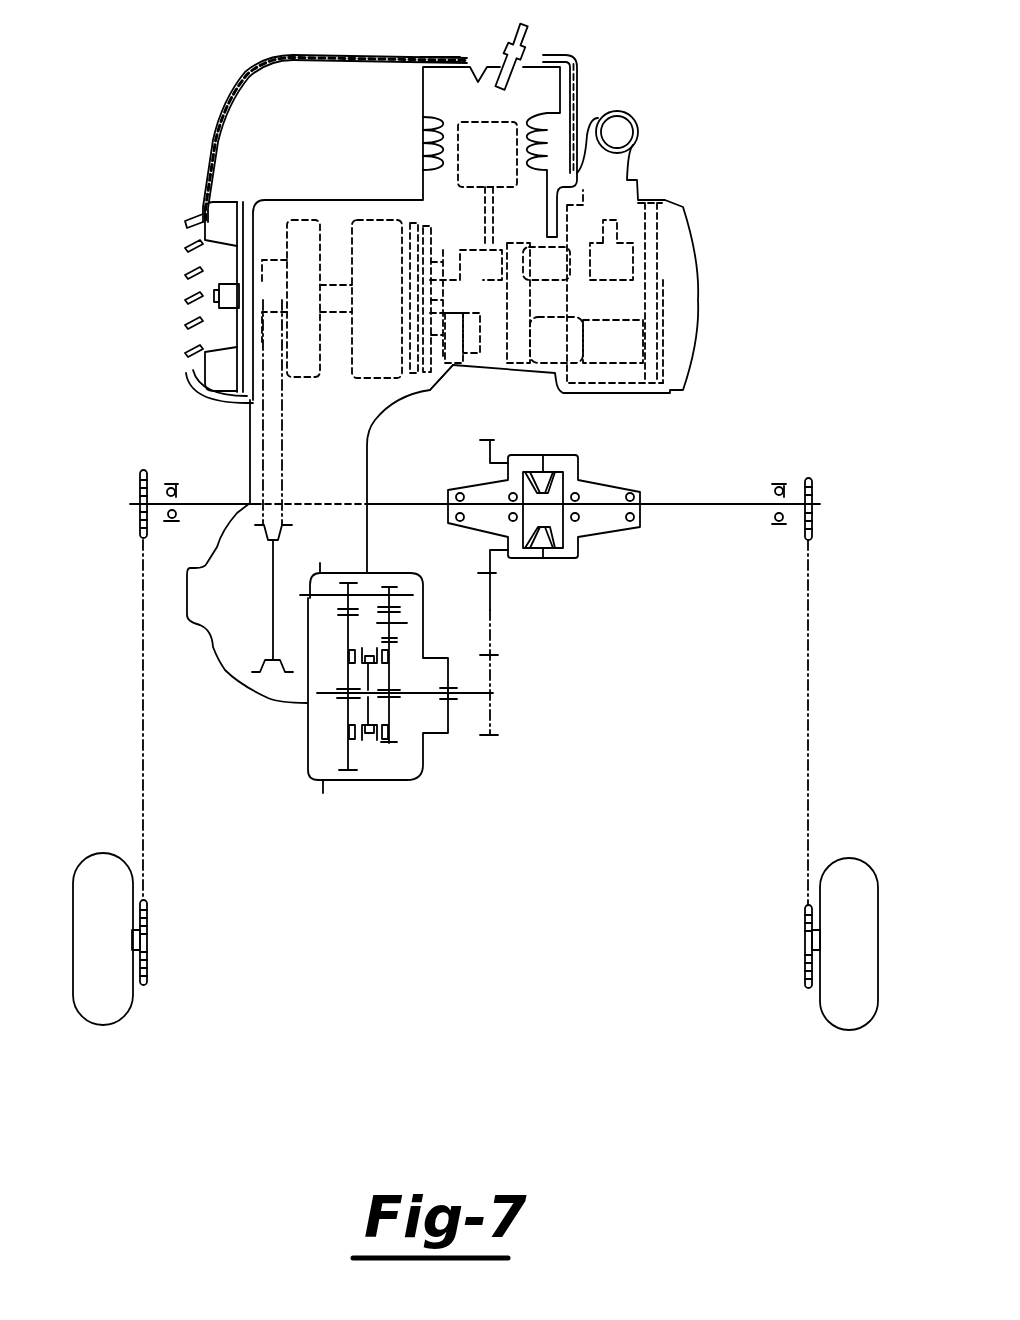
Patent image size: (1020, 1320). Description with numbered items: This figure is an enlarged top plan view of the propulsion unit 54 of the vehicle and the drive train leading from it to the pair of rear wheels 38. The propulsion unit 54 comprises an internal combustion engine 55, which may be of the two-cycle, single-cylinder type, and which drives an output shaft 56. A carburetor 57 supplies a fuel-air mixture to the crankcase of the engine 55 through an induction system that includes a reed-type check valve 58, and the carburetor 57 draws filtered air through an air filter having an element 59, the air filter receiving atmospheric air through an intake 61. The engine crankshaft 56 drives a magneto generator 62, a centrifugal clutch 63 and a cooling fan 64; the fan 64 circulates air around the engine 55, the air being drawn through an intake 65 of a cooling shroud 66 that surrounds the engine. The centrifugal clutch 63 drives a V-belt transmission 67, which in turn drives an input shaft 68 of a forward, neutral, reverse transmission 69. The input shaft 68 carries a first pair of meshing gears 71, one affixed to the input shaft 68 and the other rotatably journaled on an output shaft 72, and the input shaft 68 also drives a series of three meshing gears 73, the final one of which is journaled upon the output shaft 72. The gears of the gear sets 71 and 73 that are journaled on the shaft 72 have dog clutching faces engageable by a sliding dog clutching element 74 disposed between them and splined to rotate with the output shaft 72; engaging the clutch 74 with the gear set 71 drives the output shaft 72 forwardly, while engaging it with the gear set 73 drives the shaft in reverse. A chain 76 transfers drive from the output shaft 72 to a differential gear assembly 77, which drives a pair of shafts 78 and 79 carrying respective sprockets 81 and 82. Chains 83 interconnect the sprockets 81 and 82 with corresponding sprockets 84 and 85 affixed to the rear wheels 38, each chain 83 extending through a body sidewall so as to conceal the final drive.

The rear wheels 38 is at (92, 1025).
The propulsion unit 54 is at (590, 57).
The internal combustion engine 55 is at (423, 92).
The output shaft 56 is at (455, 367).
The carburetor 57 is at (660, 252).
The reed-type check valve 58 is at (528, 297).
The air filter element 59 is at (660, 357).
The intake 61 is at (620, 134).
The magneto generator 62 is at (383, 215).
The centrifugal clutch 63 is at (308, 215).
The cooling fan 64 is at (215, 295).
The intake 65 is at (190, 260).
The cooling shroud 66 is at (207, 170).
The V-belt transmission 67 is at (268, 442).
The input shaft 68 is at (273, 593).
The forward, neutral, reverse transmission 69 is at (422, 745).
The first pair of meshing gears 71 is at (345, 757).
The output shaft 72 is at (495, 693).
The series of three meshing gears 73 is at (390, 738).
The sliding dog clutching element 74 is at (370, 739).
The chain 76 is at (492, 633).
The differential gear assembly 77 is at (612, 530).
The shaft 78 is at (197, 502).
The shaft 79 is at (728, 504).
The sprocket 81 is at (130, 528).
The sprocket 82 is at (815, 520).
The chains 83 is at (146, 772).
The sprocket 84 is at (150, 962).
The sprocket 85 is at (803, 938).